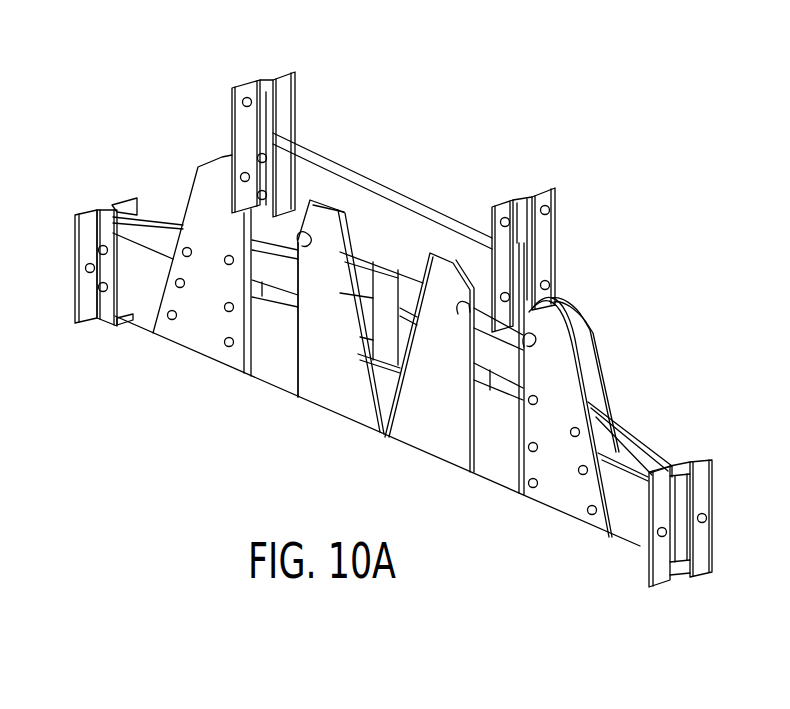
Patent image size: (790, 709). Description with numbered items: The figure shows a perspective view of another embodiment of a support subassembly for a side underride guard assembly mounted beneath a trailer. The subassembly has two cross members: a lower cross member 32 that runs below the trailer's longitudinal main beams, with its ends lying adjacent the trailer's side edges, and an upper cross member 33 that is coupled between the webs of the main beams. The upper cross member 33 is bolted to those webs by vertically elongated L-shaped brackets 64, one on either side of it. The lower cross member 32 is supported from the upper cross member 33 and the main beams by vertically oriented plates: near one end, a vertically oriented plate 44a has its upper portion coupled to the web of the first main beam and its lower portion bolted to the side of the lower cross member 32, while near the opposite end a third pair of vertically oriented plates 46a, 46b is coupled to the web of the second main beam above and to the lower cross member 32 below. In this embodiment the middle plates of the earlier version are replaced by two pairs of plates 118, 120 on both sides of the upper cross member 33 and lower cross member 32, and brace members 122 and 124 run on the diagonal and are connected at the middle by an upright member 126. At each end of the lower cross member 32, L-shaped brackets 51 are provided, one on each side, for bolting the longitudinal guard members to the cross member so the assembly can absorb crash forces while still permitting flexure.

The lower cross member 32 is at (273, 341).
The upper cross member 33 is at (318, 181).
The vertically oriented plate 44a is at (202, 321).
The vertically oriented plate 46a is at (562, 488).
The vertically oriented plate 46b is at (583, 364).
The L-shaped bracket 51 is at (90, 313).
The L-shaped bracket 64 is at (240, 84).
The plate 118 is at (335, 378).
The plate 120 is at (425, 416).
The brace member 122 is at (152, 236).
The brace member 124 is at (633, 446).
The upright member 126 is at (383, 294).